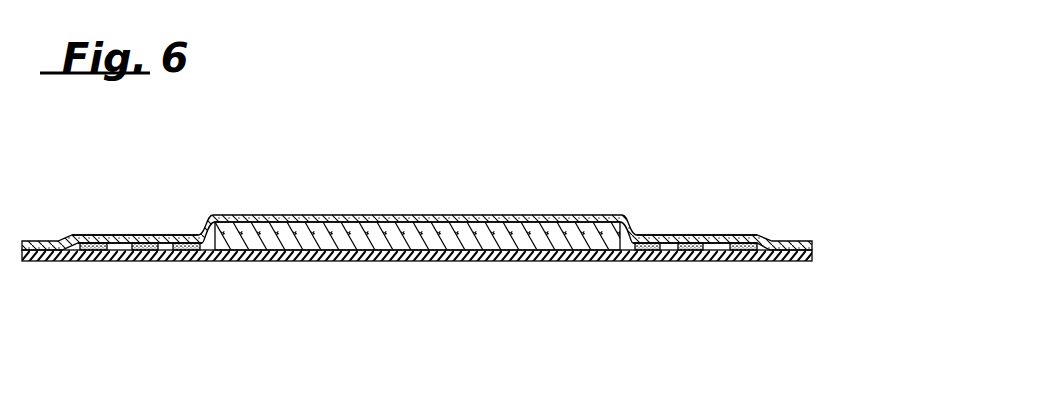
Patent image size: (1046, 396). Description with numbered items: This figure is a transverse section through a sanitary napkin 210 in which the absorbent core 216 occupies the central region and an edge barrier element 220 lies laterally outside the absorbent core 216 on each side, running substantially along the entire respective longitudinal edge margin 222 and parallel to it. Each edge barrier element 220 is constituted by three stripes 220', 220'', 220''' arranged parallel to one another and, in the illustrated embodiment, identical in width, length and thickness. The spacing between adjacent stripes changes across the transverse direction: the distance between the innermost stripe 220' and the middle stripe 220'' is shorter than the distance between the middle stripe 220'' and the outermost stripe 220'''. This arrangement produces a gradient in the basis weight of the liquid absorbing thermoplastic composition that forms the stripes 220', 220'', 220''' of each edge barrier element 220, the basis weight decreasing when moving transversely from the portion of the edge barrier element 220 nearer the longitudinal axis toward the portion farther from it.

The sanitary napkin 210 is at (790, 172).
The absorbent core 216 is at (422, 243).
The edge barrier element 220 is at (415, 185).
The longitudinal edge margin 222 is at (198, 233).
The innermost stripe 220' is at (416, 298).
The middle stripe 220'' is at (419, 298).
The outermost stripe 220''' is at (424, 298).